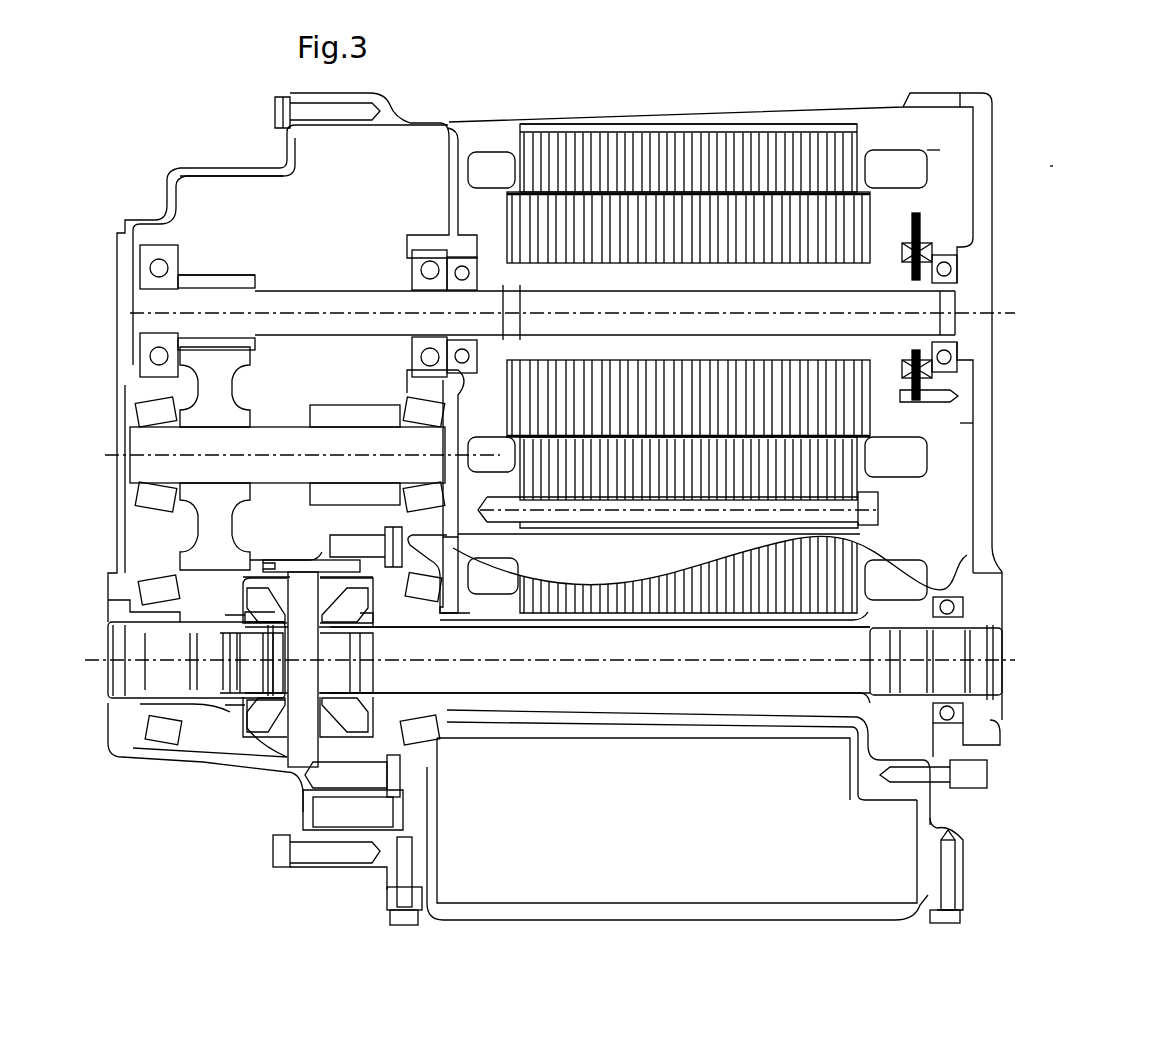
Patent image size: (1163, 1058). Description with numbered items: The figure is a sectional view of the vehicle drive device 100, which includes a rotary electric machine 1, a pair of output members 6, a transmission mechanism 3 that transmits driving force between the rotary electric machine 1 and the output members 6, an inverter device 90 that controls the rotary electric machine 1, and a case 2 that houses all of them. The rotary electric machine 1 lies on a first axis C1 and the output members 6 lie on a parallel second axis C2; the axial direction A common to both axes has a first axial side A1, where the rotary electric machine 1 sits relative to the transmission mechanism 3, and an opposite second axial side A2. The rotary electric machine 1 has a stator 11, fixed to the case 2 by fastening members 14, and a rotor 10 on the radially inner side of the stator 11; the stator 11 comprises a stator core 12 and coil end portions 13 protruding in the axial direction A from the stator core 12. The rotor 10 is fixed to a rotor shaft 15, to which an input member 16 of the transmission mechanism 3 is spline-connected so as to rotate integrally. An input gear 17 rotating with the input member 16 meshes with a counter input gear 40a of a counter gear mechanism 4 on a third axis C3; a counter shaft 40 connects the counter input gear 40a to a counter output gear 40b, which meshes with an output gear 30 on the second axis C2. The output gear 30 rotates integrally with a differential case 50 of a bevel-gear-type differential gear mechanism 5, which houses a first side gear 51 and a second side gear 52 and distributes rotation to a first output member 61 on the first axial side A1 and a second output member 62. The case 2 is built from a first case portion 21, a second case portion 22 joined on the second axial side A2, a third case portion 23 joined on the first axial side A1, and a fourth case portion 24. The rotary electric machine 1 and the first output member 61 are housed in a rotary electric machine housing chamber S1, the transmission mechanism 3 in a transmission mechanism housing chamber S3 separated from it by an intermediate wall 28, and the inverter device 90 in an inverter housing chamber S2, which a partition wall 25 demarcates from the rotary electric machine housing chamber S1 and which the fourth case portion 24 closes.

The vehicle drive device 100 is at (1050, 166).
The rotary electric machine 1 is at (933, 162).
The case 2 is at (993, 384).
The transmission mechanism 3 is at (300, 268).
The counter gear mechanism 4 is at (186, 518).
The differential gear mechanism 5 is at (368, 718).
The pair of output members 6 is at (557, 660).
The rotor 10 is at (503, 215).
The stator 11 is at (810, 132).
The stator core 12 is at (640, 132).
The coil end portions 13 is at (487, 158).
The fastening members 14 is at (880, 508).
The rotor shaft 15 is at (873, 276).
The input member 16 is at (367, 288).
The input gear 17 is at (205, 276).
The first case portion 21 is at (565, 120).
The second case portion 22 is at (120, 232).
The third case portion 23 is at (992, 238).
The fourth case portion 24 is at (450, 938).
The partition wall 25 is at (536, 725).
The intermediate wall 28 is at (449, 172).
The output gear 30 is at (350, 820).
The counter shaft 40 is at (272, 422).
The counter input gear 40a is at (245, 562).
The counter output gear 40b is at (340, 408).
The differential case 50 is at (280, 742).
The first side gear 51 is at (353, 620).
The second side gear 52 is at (246, 720).
The first output member 61 is at (640, 700).
The second output member 62 is at (210, 705).
The inverter device 90 is at (917, 863).
The rotary electric machine housing chamber S1 is at (935, 530).
The inverter housing chamber S2 is at (925, 831).
The transmission mechanism housing chamber S3 is at (205, 190).
The first axis C1 is at (543, 313).
The second axis C2 is at (528, 660).
The third axis C3 is at (281, 455).
The axial direction A is at (198, 112).
The first axial side A1 is at (198, 112).
The second axial side A2 is at (72, 112).